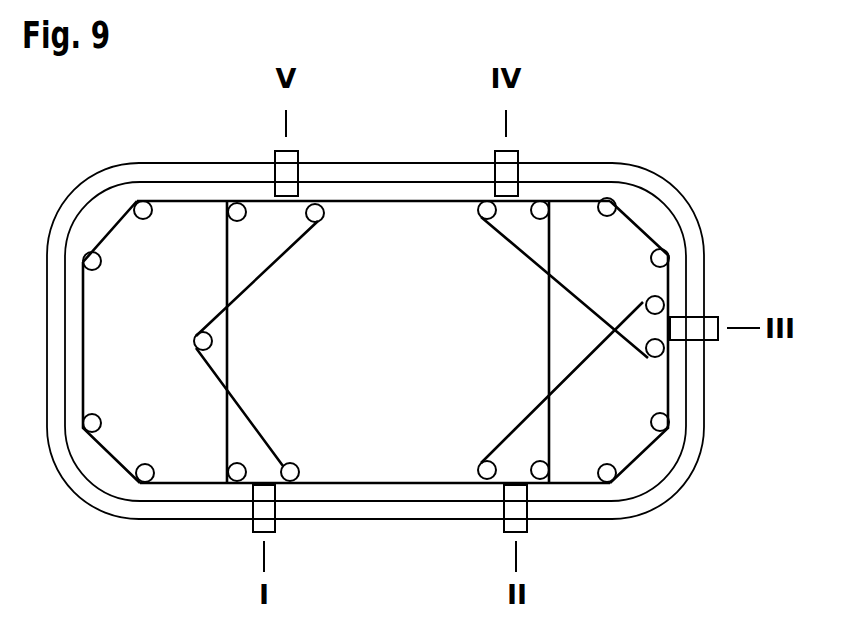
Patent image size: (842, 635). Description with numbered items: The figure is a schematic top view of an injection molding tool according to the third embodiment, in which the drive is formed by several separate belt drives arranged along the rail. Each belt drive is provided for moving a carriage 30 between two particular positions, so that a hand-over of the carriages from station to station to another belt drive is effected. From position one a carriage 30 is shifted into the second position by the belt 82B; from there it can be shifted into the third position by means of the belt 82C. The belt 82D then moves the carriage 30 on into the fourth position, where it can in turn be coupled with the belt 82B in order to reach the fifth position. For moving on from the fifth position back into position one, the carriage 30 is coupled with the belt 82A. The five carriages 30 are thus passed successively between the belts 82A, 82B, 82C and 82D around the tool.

The carriage 30 is at (292, 157).
The belt of belt drive 80A 82A is at (217, 310).
The belt of belt drive 80B 82B is at (230, 345).
The belt of belt drive 80C 82C is at (668, 378).
The belt of belt drive 80D 82D is at (578, 203).